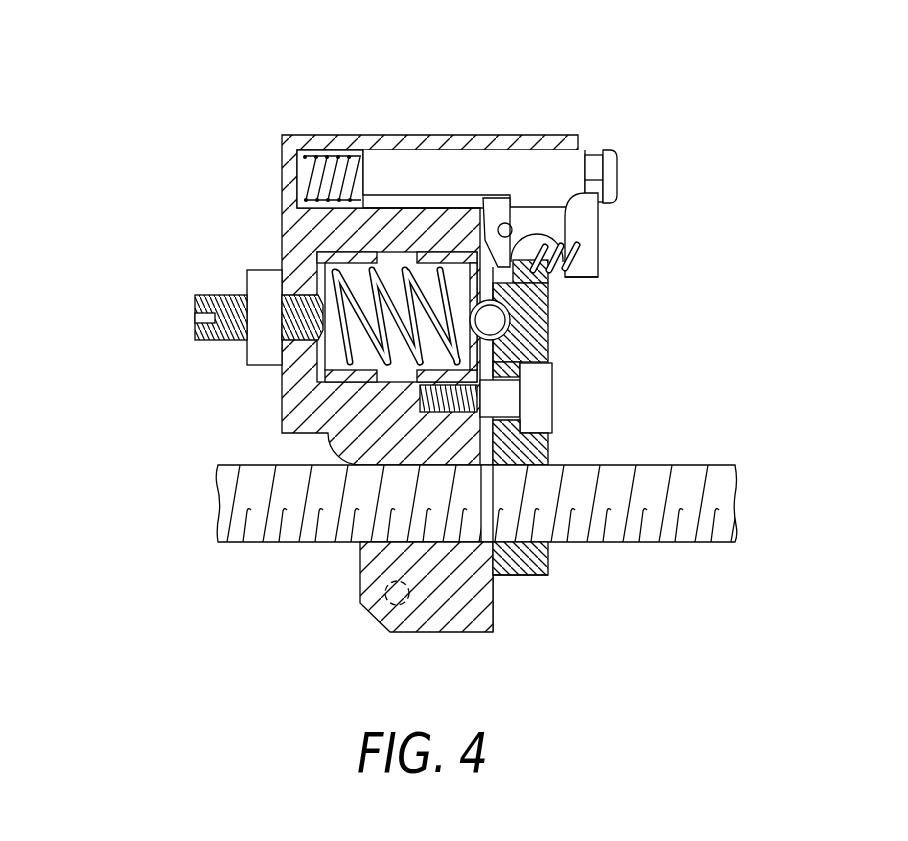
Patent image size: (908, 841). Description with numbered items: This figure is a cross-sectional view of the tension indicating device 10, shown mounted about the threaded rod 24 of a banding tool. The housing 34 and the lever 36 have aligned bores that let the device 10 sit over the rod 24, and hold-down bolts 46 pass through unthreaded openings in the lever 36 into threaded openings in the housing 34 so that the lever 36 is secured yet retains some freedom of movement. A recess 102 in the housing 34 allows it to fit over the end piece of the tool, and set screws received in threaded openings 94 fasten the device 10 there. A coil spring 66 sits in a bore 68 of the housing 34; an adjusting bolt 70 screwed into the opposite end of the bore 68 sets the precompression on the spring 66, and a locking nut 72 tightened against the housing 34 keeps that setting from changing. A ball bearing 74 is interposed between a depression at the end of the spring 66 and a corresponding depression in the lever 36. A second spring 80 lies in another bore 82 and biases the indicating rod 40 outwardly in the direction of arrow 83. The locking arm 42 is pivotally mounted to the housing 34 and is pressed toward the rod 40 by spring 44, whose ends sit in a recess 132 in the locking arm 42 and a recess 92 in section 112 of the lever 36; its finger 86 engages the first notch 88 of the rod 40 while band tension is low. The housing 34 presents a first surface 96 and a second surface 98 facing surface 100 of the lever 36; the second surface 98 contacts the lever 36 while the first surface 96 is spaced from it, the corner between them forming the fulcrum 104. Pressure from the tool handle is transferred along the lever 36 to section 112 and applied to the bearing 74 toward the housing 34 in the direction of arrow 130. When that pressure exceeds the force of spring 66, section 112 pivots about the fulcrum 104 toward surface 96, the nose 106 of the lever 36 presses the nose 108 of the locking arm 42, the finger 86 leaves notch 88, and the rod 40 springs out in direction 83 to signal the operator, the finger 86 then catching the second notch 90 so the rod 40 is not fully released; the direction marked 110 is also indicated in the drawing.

The tension indicating device 10 is at (645, 22).
The threaded rod 24 is at (738, 465).
The housing 34 is at (378, 573).
The lever 36 is at (543, 575).
The indicating rod 40 is at (633, 147).
The locking arm 42 is at (593, 237).
The spring 44 is at (550, 283).
The hold-down bolts 46 is at (537, 395).
The coil spring 66 is at (350, 360).
The bore 68 is at (303, 272).
The adjusting bolt 70 is at (203, 295).
The locking nut 72 is at (257, 353).
The ball bearing 74 is at (495, 325).
The spring 80 is at (330, 150).
The bore 82 is at (303, 150).
The arrow 83 is at (762, 178).
The finger 86 is at (600, 213).
The first notch 88 is at (617, 190).
The second notch 90 is at (423, 197).
The recess 92 is at (550, 283).
The threaded openings 94 is at (398, 604).
The first surface 96 is at (520, 330).
The second surface 98 is at (493, 622).
The surface 100 is at (547, 443).
The recess 102 is at (326, 455).
The fulcrum 104 is at (510, 575).
The nose 106 is at (521, 238).
The nose 108 is at (491, 250).
The release direction 110 is at (585, 556).
The section 112 is at (632, 334).
The arrow 130 is at (768, 328).
The recess 132 is at (617, 162).